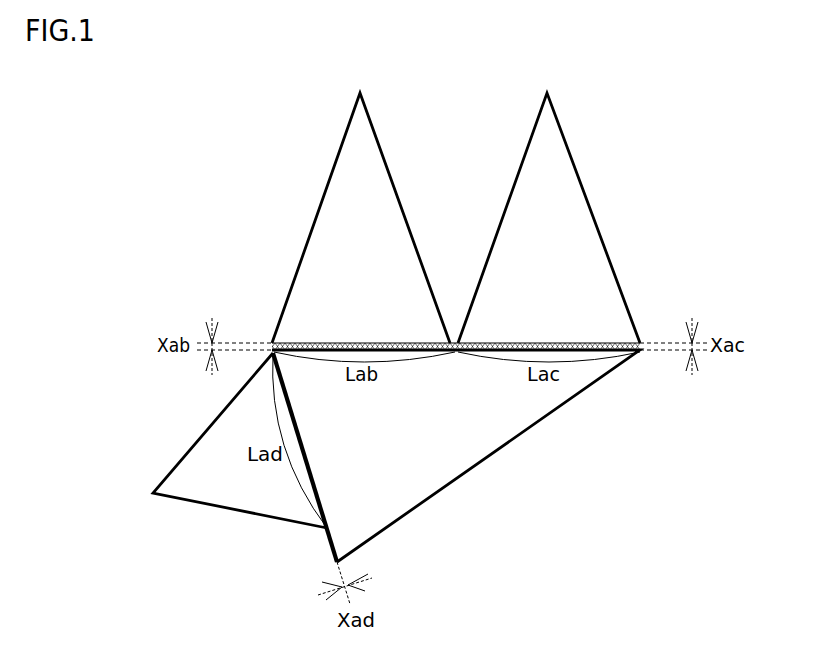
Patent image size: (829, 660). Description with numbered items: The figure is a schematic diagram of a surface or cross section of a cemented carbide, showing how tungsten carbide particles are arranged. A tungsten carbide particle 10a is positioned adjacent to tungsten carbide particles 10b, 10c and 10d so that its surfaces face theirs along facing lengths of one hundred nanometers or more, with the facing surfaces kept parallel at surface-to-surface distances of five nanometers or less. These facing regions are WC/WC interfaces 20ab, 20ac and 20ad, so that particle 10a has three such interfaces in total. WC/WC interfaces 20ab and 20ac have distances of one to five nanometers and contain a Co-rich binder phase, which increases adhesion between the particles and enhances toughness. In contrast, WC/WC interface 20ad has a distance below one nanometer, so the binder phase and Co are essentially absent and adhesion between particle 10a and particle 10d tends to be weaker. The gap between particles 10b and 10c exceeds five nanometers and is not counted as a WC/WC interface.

The tungsten carbide particle 10a is at (452, 442).
The tungsten carbide particle 10b is at (338, 228).
The tungsten carbide particle 10c is at (560, 190).
The tungsten carbide particle 10d is at (227, 487).
The WC/WC interface 20ab is at (320, 343).
The WC/WC interface 20ac is at (553, 343).
The WC/WC interface 20ad is at (313, 485).